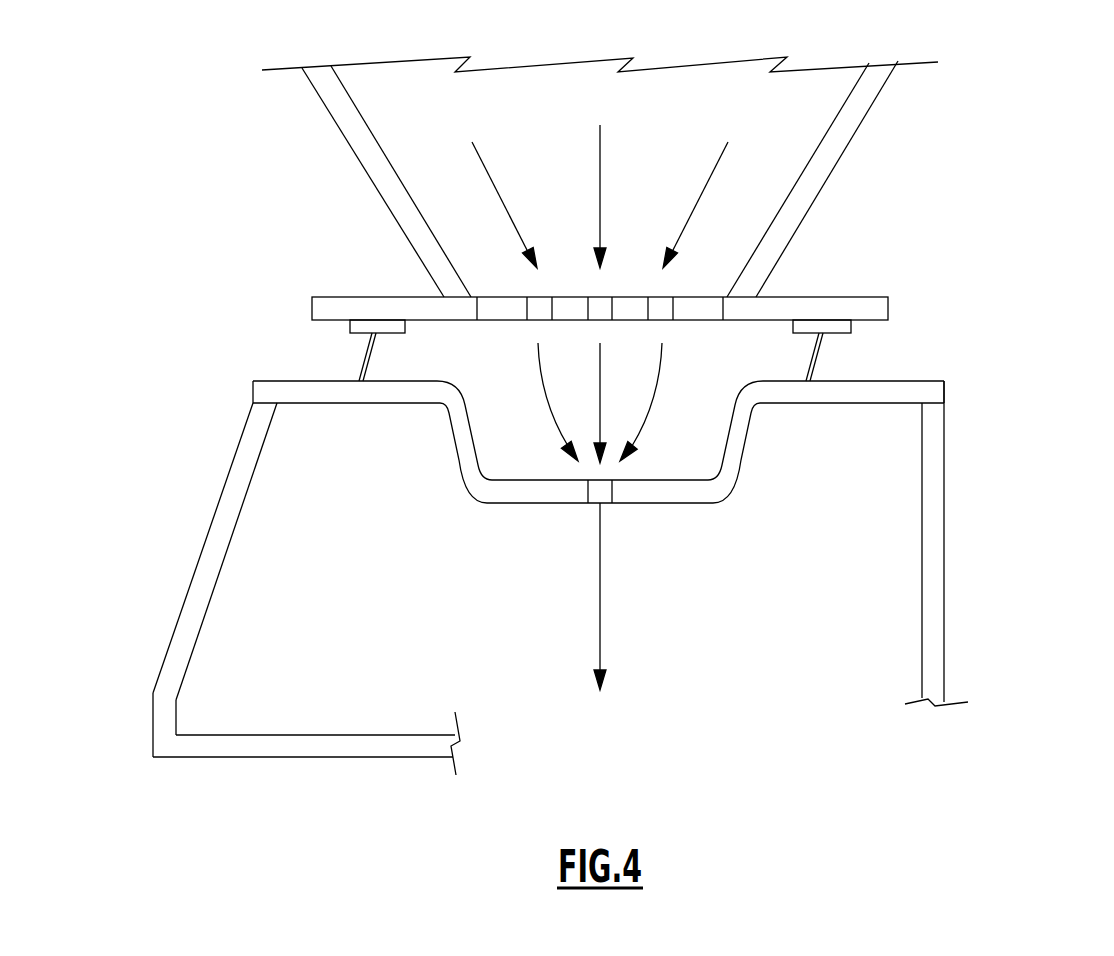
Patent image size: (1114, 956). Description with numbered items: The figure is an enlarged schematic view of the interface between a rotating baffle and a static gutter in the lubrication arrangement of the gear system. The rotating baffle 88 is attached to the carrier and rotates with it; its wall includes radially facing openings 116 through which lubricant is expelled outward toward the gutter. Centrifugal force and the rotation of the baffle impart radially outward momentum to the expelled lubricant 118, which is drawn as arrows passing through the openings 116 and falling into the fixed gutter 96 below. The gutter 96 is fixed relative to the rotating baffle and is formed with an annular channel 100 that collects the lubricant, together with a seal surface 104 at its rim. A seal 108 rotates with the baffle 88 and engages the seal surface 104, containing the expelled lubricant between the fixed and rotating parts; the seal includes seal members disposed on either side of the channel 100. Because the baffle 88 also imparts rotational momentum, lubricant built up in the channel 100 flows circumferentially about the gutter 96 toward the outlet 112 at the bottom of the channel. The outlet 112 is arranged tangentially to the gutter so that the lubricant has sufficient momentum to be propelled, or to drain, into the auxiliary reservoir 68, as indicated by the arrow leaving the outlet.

The forward rotating baffle 88 is at (836, 142).
The radially facing openings 116 is at (680, 290).
The expelled lubricant 118 is at (450, 203).
The forward static gutter 96 is at (619, 542).
The channel 100 is at (494, 494).
The forward seal surface 104 is at (280, 365).
The forward seal 108 is at (845, 358).
The outlet 112 is at (620, 520).
The auxiliary reservoir 68 is at (599, 647).